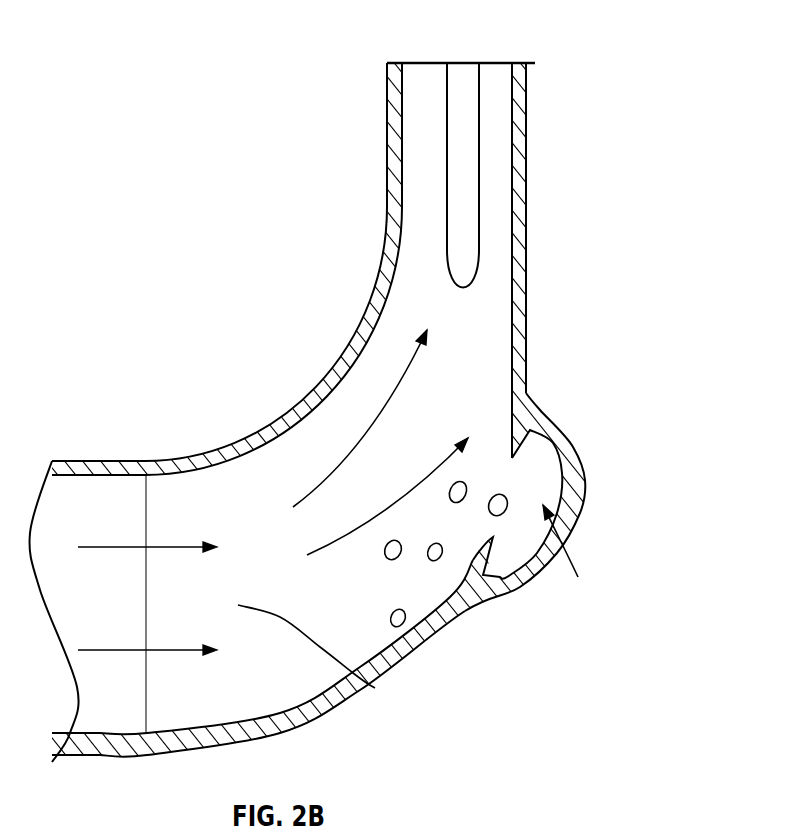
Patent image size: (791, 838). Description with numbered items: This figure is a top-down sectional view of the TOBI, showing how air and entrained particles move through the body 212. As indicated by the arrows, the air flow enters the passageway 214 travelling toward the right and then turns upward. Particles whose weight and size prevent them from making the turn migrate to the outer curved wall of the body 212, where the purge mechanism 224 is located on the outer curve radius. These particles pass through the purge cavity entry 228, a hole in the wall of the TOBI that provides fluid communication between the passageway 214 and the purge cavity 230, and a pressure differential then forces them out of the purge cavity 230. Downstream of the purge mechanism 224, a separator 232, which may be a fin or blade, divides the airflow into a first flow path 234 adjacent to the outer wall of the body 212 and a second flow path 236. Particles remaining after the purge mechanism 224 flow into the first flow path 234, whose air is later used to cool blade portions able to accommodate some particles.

The body 212 is at (247, 440).
The passageway 214 is at (375, 688).
The purge mechanism 224 is at (565, 430).
The purge cavity entry 228 is at (498, 532).
The purge cavity 230 is at (569, 555).
The separator 232 is at (475, 97).
The first flow path 234 is at (500, 183).
The second flow path 236 is at (412, 143).